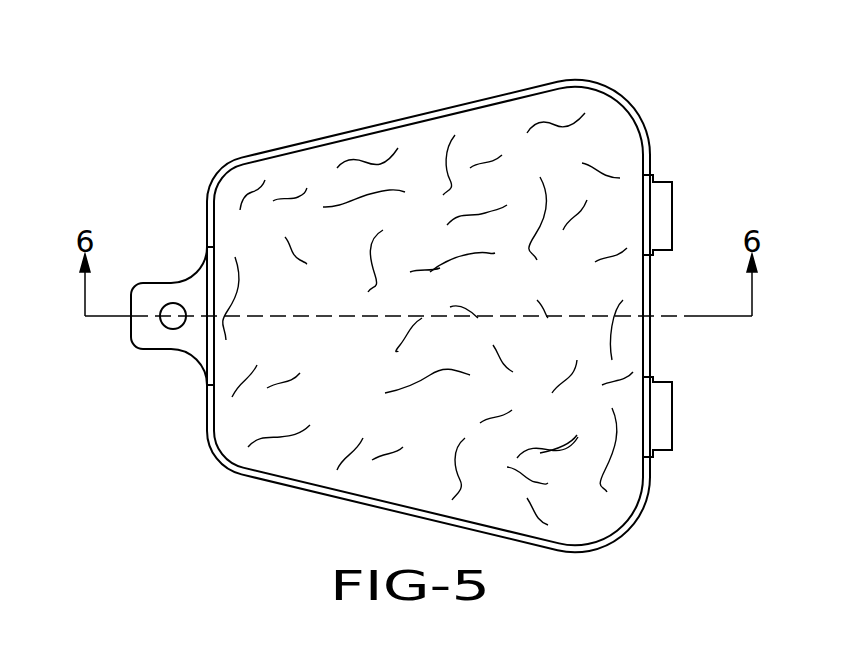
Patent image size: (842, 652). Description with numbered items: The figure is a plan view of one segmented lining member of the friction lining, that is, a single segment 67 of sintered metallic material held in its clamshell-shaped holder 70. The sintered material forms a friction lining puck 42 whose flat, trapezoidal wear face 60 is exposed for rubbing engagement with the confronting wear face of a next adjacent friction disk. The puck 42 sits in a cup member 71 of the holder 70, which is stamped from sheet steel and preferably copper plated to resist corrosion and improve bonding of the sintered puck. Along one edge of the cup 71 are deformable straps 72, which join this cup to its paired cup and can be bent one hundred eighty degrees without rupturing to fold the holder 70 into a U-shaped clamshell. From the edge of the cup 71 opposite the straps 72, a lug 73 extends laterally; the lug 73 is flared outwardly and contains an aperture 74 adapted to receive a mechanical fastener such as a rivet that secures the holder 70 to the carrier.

The friction lining puck 42 is at (330, 440).
The wear face 60 is at (425, 142).
The segment 67 is at (305, 165).
The holder 70 is at (645, 110).
The cup member 71 is at (612, 93).
The deformable strap 72 is at (674, 195).
The lug 73 is at (133, 345).
The aperture 74 is at (173, 302).